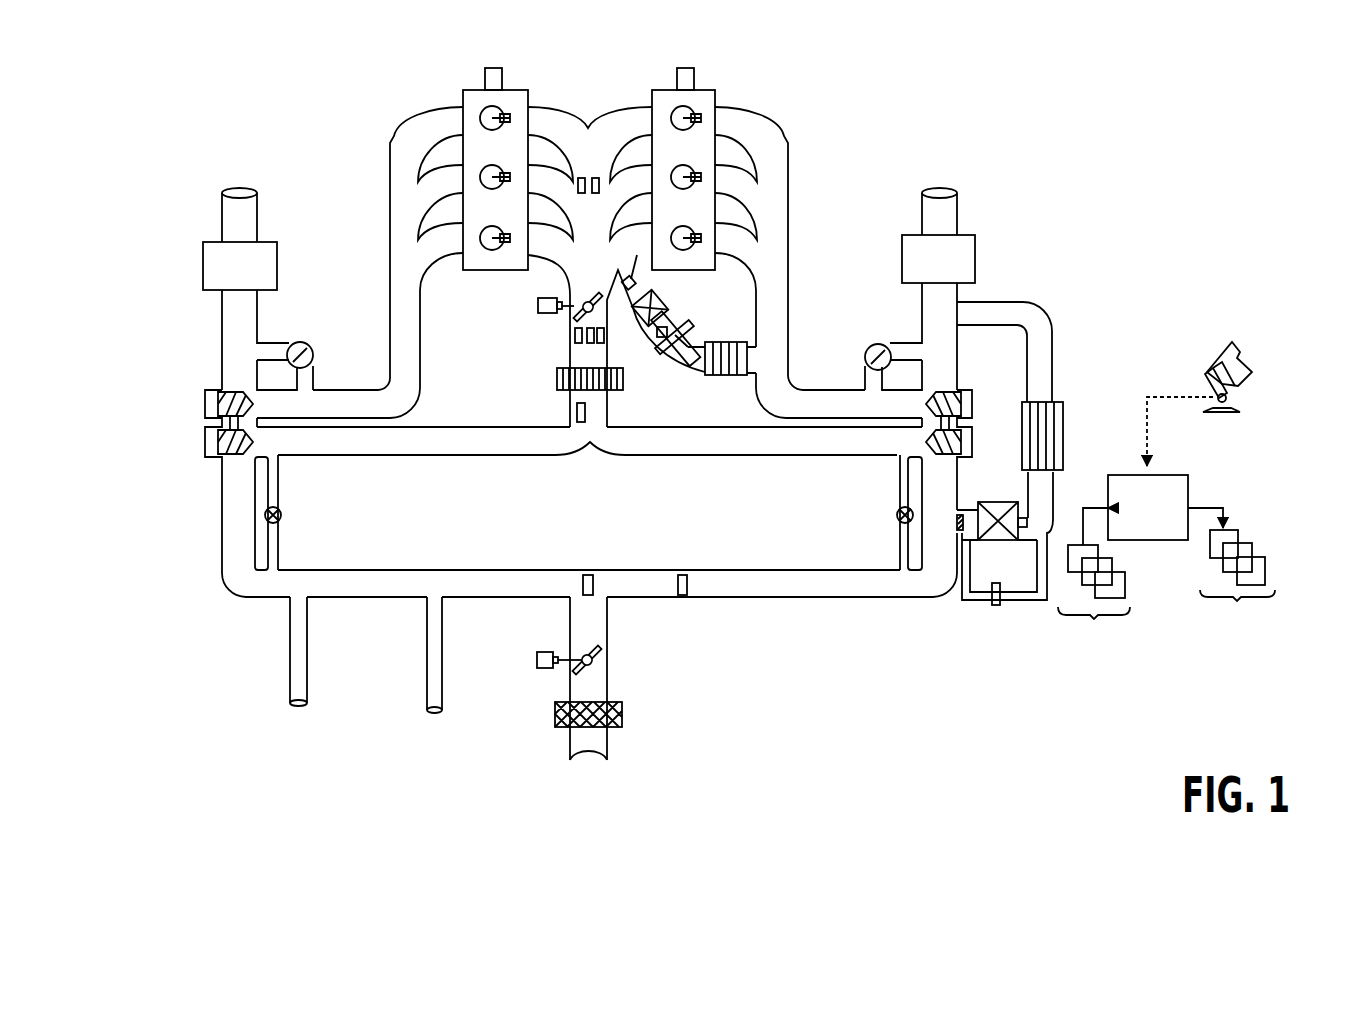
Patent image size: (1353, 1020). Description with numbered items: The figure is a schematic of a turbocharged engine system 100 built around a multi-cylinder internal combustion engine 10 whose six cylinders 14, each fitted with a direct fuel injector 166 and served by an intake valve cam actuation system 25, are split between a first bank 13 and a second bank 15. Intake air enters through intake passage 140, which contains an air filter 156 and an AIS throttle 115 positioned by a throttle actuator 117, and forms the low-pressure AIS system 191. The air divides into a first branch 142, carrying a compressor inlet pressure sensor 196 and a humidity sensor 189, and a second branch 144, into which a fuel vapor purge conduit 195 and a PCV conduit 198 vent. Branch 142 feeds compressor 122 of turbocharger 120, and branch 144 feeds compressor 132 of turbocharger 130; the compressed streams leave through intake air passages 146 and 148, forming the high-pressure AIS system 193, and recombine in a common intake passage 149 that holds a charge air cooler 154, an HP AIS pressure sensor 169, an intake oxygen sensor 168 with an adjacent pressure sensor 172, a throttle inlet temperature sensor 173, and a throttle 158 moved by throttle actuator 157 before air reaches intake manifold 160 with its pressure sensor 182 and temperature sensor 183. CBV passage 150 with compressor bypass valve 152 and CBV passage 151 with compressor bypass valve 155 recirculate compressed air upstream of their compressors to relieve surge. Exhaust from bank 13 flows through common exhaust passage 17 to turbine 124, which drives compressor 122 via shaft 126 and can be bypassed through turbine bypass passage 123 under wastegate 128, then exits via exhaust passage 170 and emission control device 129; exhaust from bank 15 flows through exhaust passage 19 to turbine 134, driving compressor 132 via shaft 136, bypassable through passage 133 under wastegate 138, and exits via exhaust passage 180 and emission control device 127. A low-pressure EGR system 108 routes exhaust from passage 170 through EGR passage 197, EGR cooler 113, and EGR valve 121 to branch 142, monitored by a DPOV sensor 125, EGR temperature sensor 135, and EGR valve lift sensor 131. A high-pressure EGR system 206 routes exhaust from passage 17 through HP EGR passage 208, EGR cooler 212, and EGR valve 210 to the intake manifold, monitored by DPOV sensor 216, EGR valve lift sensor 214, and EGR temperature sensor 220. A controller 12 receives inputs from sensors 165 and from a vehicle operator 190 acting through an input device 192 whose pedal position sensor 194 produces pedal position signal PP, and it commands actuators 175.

The internal combustion engine 10 is at (916, 96).
The turbocharged engine system 100 is at (266, 138).
The low-pressure EGR system 108 is at (1046, 280).
The intake manifold 160 is at (588, 104).
The second bank of cylinders 15 is at (480, 90).
The first bank of cylinders 13 is at (702, 90).
The cylinder 14 is at (690, 176).
The fuel injector 166 is at (696, 180).
The intake valve cam actuation system 25 is at (502, 70).
The intake manifold pressure sensor 182 is at (567, 189).
The intake manifold temperature sensor 183 is at (613, 190).
The exhaust passage 180 is at (258, 238).
The emission control device 127 is at (240, 266).
The exhaust passage 170 is at (922, 226).
The emission control device 129 is at (938, 259).
The common exhaust passage 19 is at (390, 322).
The common exhaust passage 17 is at (788, 328).
The turbine bypass passage 133 is at (272, 343).
The wastegate 138 is at (310, 349).
The turbine bypass passage 123 is at (906, 343).
The wastegate 128 is at (867, 350).
The turbocharger 130 is at (238, 382).
The exhaust turbine 134 is at (218, 394).
The shaft 136 is at (218, 440).
The compressor 132 is at (222, 455).
The turbocharger 120 is at (938, 356).
The exhaust turbine 124 is at (955, 394).
The shaft 126 is at (957, 440).
The compressor 122 is at (960, 452).
The high-pressure AIS system 193 is at (589, 441).
The common intake passage 149 is at (570, 332).
The throttle actuator 157 is at (538, 304).
The throttle 158 is at (590, 300).
The intake oxygen sensor 168 is at (577, 344).
The pressure sensor 172 is at (590, 345).
The throttle inlet temperature sensor 173 is at (601, 345).
The charge air cooler 154 is at (624, 388).
The HP AIS pressure sensor 169 is at (577, 412).
The EGR valve 210 is at (648, 326).
The differential pressure over valve sensor 216 is at (700, 300).
The EGR valve lift sensor 214 is at (692, 318).
The EGR temperature sensor 220 is at (632, 276).
The EGR cooler 212 is at (727, 342).
The HP EGR passage 208 is at (682, 372).
The high-pressure EGR system 206 is at (681, 396).
The low-pressure AIS system 191 is at (589, 587).
The intake air passage 148 is at (350, 458).
The intake air passage 146 is at (742, 458).
The second branch of intake passage 144 is at (372, 570).
The first branch of intake passage 142 is at (756, 570).
The CBV passage 150 is at (279, 484).
The CBV passage 151 is at (906, 536).
The compressor bypass valve 152 is at (282, 514).
The compressor bypass valve 155 is at (897, 513).
The compressor inlet pressure sensor 196 is at (584, 574).
The humidity sensor 189 is at (679, 574).
The fuel vapor purge conduit 195 is at (308, 664).
The positive crankcase ventilation conduit 198 is at (443, 670).
The intake passage 140 is at (607, 756).
The air filter 156 is at (622, 712).
The throttle actuator 117 is at (537, 654).
The air induction system throttle 115 is at (588, 652).
The EGR passage 197 is at (1054, 348).
The EGR cooler 113 is at (1063, 430).
The EGR valve lift sensor 131 is at (1040, 520).
The EGR temperature sensor 135 is at (964, 514).
The EGR valve 121 is at (998, 541).
The differential pressure over valve sensor 125 is at (998, 605).
The controller 12 is at (1153, 510).
The pedal position signal PP is at (1150, 456).
The sensors 165 is at (1094, 592).
The actuators 175 is at (1237, 576).
The vehicle operator 190 is at (1256, 360).
The input device 192 is at (1206, 372).
The pedal position sensor 194 is at (1242, 402).